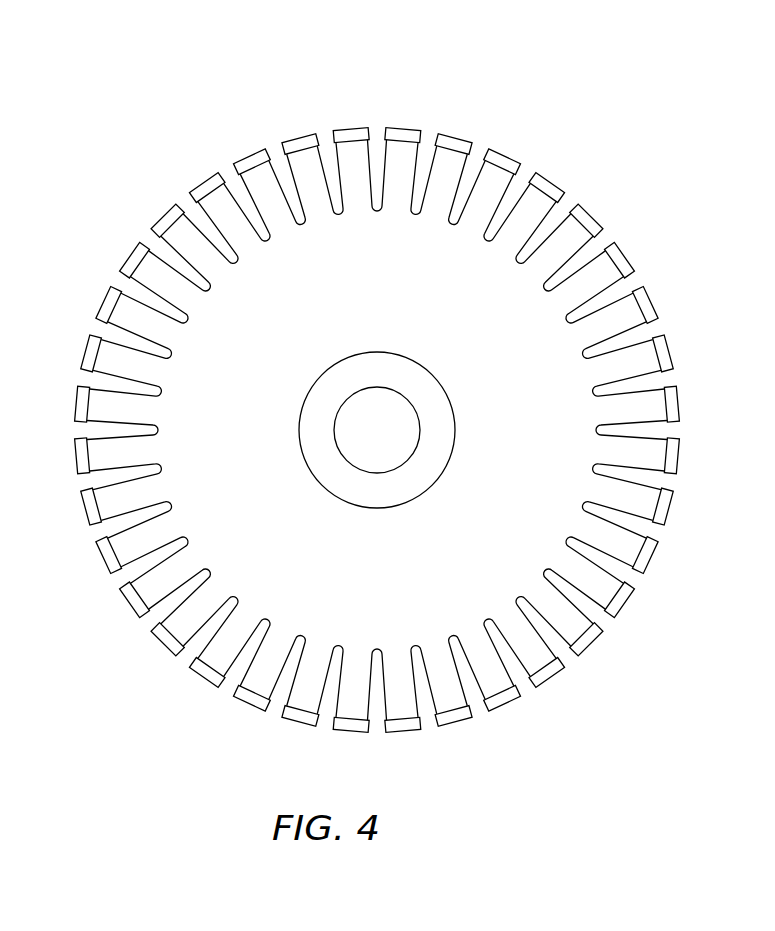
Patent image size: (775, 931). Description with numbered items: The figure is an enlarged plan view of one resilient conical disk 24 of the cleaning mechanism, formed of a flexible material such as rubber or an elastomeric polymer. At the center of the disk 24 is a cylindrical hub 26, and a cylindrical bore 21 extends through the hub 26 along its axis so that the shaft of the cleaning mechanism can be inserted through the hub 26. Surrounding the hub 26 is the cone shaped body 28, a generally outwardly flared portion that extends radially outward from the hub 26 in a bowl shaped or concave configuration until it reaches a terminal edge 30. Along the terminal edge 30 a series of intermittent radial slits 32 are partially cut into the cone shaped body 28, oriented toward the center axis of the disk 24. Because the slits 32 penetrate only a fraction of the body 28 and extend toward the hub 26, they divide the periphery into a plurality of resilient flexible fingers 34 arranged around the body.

The cylindrical bore 21 is at (383, 427).
The resilient conical disk 24 is at (405, 130).
The hub 26 is at (440, 437).
The cone shaped body 28 is at (270, 542).
The terminal edge 30 is at (167, 222).
The radial slit 32 is at (555, 643).
The resilient flexible finger 34 is at (623, 548).